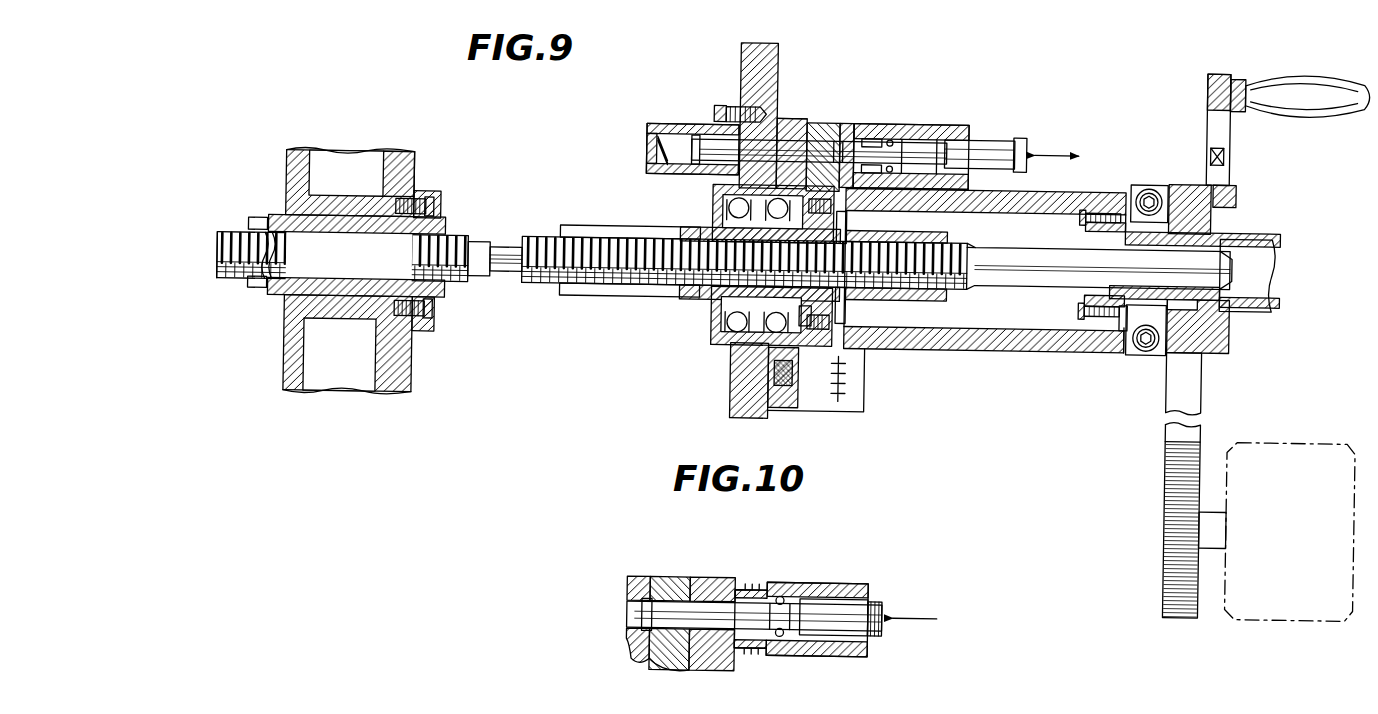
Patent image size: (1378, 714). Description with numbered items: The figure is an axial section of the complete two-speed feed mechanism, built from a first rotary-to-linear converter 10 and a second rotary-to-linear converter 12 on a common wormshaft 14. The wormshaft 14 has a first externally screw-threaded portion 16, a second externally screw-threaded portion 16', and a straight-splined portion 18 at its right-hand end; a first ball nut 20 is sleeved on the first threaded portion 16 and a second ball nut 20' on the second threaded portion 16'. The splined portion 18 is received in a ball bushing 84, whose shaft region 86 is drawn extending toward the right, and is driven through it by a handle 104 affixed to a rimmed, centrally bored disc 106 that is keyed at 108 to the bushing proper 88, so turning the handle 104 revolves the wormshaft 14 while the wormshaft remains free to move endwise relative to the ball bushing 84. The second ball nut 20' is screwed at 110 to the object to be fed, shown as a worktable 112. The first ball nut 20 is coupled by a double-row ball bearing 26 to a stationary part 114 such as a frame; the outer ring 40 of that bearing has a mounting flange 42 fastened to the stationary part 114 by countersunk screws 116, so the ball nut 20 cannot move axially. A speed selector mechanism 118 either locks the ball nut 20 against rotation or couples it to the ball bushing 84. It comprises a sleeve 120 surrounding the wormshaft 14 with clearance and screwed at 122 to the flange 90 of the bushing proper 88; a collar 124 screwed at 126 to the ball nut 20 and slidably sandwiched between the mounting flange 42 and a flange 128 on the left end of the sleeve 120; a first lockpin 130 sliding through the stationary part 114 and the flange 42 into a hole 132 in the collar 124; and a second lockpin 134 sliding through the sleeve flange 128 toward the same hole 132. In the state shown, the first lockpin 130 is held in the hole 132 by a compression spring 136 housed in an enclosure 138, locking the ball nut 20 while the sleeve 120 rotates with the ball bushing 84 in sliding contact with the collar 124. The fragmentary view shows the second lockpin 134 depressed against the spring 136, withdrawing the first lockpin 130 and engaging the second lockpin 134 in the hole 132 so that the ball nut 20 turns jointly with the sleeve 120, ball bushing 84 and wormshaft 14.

In FIG. 9, the first rotary-to-linear converter 10 is at (706, 326).
In FIG. 9, the second rotary-to-linear converter 12 is at (275, 303).
In FIG. 9, the wormshaft 14 is at (497, 279).
In FIG. 9, the first externally screw-threaded portion 16 is at (592, 292).
In FIG. 9, the second externally screw-threaded portion 16' is at (233, 284).
In FIG. 9, the straight-splined portion 18 is at (1000, 244).
In FIG. 9, the first ball nut 20 is at (753, 265).
In FIG. 9, the second ball nut 20' is at (359, 232).
In FIG. 9, the double-row ball bearing 26 is at (788, 121).
In FIG. 9, the outer ring 40 is at (712, 187).
In FIG. 9, the mounting flange 42 is at (790, 126).
In FIG. 10, the mounting flange 42 is at (632, 578).
In FIG. 9, the ball bushing 84 is at (1240, 226).
In FIG. 9, the drive shaft 86 is at (1025, 244).
In FIG. 9, the bushing proper 88 is at (1085, 214).
In FIG. 9, the flange 90 is at (1123, 326).
In FIG. 9, the handle 104 is at (1300, 82).
In FIG. 9, the rimmed, centrally bored disc 106 is at (1230, 341).
In FIG. 9, the key 108 is at (1216, 262).
In FIG. 9, the screw 110 is at (433, 207).
In FIG. 9, the worktable 112 is at (402, 158).
In FIG. 9, the stationary part 114 is at (740, 84).
In FIG. 9, the countersunk screws 116 is at (735, 373).
In FIG. 9, the speed selector mechanism 118 is at (947, 118).
In FIG. 9, the sleeve 120 is at (1083, 187).
In FIG. 9, the screw connection 122 is at (1100, 313).
In FIG. 9, the collar 124 is at (822, 128).
In FIG. 10, the collar 124 is at (662, 580).
In FIG. 9, the screw connection 126 is at (842, 317).
In FIG. 9, the flange 128 is at (868, 122).
In FIG. 10, the flange 128 is at (735, 592).
In FIG. 9, the first lockpin 130 is at (690, 148).
In FIG. 10, the first lockpin 130 is at (635, 625).
In FIG. 9, the hole 132 is at (858, 124).
In FIG. 10, the hole 132 is at (690, 600).
In FIG. 9, the second lockpin 134 is at (990, 139).
In FIG. 10, the second lockpin 134 is at (855, 612).
In FIG. 9, the compression spring 136 is at (652, 127).
In FIG. 9, the enclosure 138 is at (657, 158).